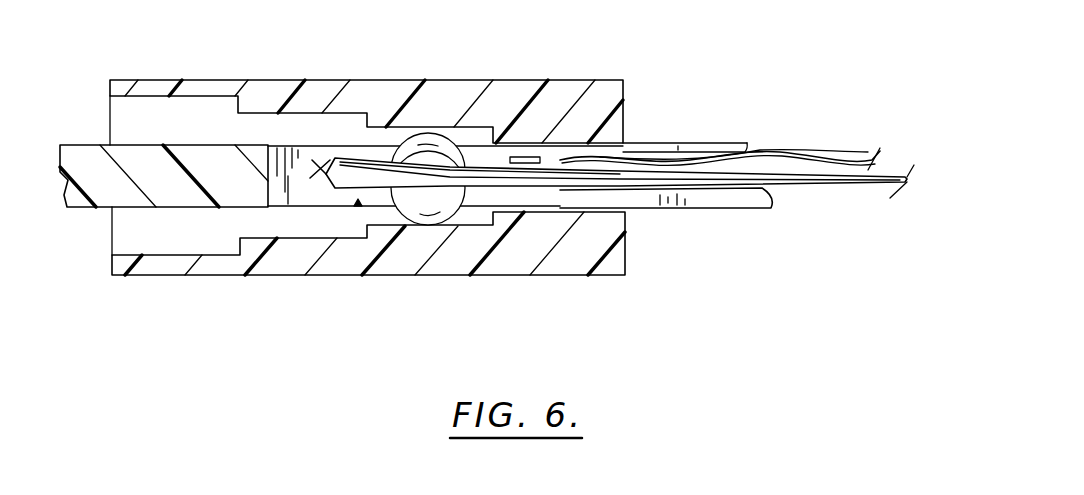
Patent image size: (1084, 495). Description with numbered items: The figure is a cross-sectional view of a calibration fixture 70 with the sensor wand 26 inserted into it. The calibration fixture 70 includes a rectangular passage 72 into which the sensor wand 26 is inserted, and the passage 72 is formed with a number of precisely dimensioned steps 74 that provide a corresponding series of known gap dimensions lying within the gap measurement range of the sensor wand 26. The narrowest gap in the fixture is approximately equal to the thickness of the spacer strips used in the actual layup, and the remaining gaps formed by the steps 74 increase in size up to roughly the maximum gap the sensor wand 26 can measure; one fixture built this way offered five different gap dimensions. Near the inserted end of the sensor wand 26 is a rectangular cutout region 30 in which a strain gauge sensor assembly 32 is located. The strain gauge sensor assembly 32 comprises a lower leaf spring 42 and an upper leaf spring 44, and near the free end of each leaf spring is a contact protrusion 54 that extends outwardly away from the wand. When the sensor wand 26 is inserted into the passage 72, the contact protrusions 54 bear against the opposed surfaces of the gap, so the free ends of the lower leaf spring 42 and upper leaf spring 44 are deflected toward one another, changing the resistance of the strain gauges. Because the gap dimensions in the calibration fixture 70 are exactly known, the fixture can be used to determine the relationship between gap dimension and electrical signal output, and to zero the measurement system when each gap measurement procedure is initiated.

The sensor wand 26 is at (83, 208).
The rectangular cutout region 30 is at (300, 190).
The strain gauge sensor assembly 32 is at (357, 205).
The lower leaf spring 42 is at (490, 205).
The upper leaf spring 44 is at (508, 158).
The contact protrusion 54 is at (457, 142).
The calibration fixture 70 is at (567, 97).
The rectangular passage 72 is at (217, 228).
The steps 74 is at (263, 113).